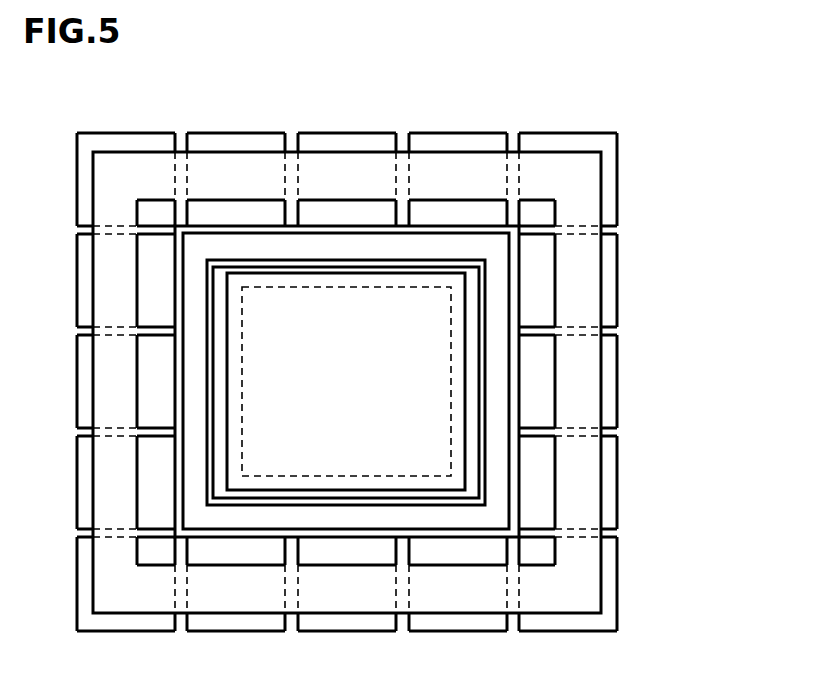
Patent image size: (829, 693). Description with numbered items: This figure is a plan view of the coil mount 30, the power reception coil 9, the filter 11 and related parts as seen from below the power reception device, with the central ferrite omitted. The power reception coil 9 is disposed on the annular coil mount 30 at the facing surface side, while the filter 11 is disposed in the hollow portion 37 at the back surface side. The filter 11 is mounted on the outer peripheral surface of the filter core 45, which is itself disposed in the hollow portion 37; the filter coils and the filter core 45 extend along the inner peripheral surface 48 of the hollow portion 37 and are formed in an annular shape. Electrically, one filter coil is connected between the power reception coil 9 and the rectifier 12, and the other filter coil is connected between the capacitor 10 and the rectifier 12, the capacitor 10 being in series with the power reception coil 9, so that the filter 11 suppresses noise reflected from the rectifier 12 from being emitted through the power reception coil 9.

The power reception coil 9 is at (487, 597).
The coil mount 30 is at (487, 557).
The filter 11 is at (495, 483).
The filter core 45 is at (485, 434).
The rectifier 12 is at (464, 369).
The capacitor 10 is at (443, 339).
The hollow portion 37 is at (353, 112).
The inner peripheral surface 48 is at (463, 227).